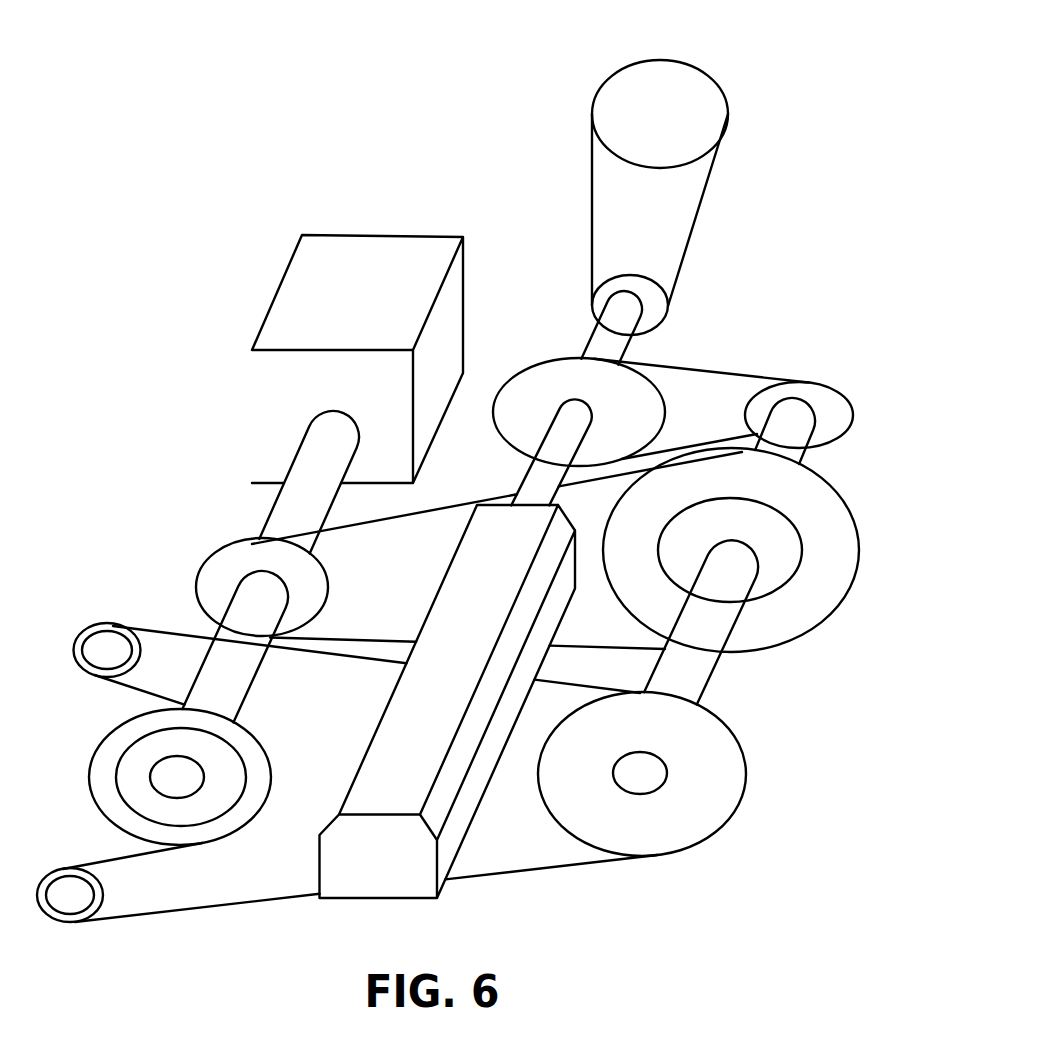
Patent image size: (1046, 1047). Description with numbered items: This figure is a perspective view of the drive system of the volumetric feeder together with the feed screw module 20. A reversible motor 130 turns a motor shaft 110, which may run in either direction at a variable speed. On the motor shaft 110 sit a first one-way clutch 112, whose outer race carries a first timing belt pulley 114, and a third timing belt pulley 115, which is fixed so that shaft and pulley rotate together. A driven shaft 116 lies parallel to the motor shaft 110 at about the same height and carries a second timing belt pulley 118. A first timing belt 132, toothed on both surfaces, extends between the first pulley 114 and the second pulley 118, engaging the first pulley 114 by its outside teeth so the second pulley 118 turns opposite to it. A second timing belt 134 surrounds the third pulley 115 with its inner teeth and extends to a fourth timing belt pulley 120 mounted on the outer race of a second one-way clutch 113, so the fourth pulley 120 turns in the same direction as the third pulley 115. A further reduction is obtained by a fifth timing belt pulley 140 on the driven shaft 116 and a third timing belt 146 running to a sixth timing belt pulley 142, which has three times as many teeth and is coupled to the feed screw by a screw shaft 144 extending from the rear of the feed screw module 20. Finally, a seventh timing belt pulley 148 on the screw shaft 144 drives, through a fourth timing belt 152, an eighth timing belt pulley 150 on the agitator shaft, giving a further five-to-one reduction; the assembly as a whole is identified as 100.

The feed screw module 20 is at (431, 600).
The drive assembly 100 is at (547, 937).
The motor shaft 110 is at (271, 508).
The first one-way clutch 112 is at (124, 757).
The second one-way clutch 113 is at (747, 500).
The first timing belt pulley 114 is at (100, 813).
The third timing belt pulley 115 is at (212, 555).
The driven shaft 116 is at (699, 704).
The second timing belt pulley 118 is at (728, 822).
The fourth timing belt pulley 120 is at (857, 520).
The reversible motor 130 is at (252, 421).
The first timing belt 132 is at (183, 910).
The second timing belt 134 is at (342, 639).
The fifth timing belt pulley 140 is at (851, 424).
The sixth timing belt pulley 142 is at (657, 392).
The screw shaft 144 is at (527, 473).
The third timing belt 146 is at (657, 450).
The seventh timing belt pulley 148 is at (612, 279).
The eighth timing belt pulley 150 is at (632, 62).
The fourth timing belt 152 is at (593, 250).